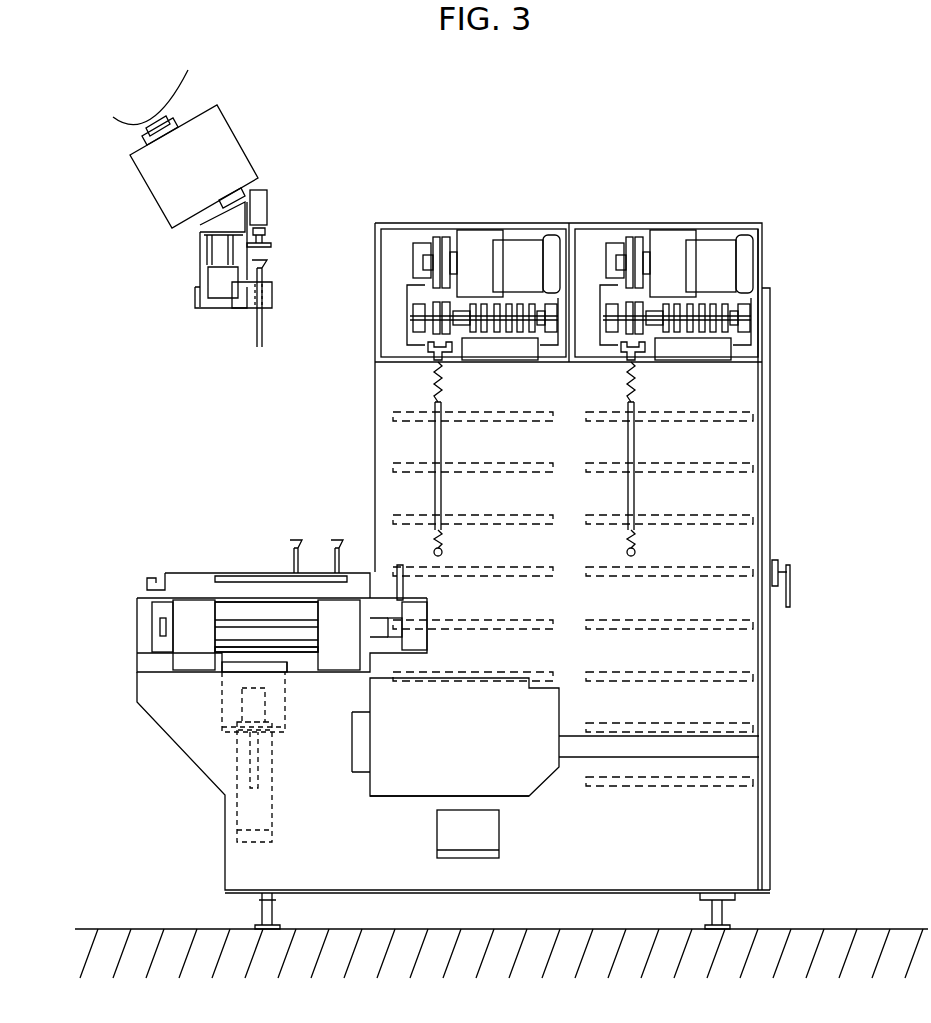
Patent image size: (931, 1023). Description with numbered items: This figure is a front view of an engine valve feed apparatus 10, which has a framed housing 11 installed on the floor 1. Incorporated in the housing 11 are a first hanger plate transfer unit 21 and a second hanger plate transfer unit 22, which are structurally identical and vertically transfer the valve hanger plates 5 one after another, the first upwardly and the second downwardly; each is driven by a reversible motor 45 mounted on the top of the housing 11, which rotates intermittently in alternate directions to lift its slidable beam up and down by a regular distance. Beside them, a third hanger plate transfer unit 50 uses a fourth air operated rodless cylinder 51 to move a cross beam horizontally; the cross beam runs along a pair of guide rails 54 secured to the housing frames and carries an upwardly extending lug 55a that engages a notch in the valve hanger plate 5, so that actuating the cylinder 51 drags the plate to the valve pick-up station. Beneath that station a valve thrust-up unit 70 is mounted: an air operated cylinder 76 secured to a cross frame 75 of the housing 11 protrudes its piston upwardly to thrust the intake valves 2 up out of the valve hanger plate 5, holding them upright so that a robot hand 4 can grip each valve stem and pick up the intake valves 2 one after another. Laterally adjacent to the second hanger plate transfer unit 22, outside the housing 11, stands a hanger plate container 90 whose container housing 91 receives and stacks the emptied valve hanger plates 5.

The floor 1 is at (808, 937).
The intake valve 2 is at (296, 540).
The robot hand 4 is at (179, 287).
The valve hanger plate 5 is at (672, 412).
The engine valve feed apparatus 10 is at (328, 380).
The framed housing 11 is at (775, 436).
The first hanger plate transfer unit 21 is at (617, 213).
The second hanger plate transfer unit 22 is at (519, 213).
The reversible motor 45 is at (498, 250).
The third hanger plate transfer unit 50 is at (124, 620).
The fourth air operated rodless cylinder 51 is at (250, 622).
The guide rails 54 is at (300, 655).
The lug 55a is at (403, 588).
The valve thrust-up unit 70 is at (222, 745).
The cross frame 75 is at (285, 735).
The air operated cylinder 76 is at (262, 832).
The hanger plate container 90 is at (528, 817).
The container housing 91 is at (388, 796).